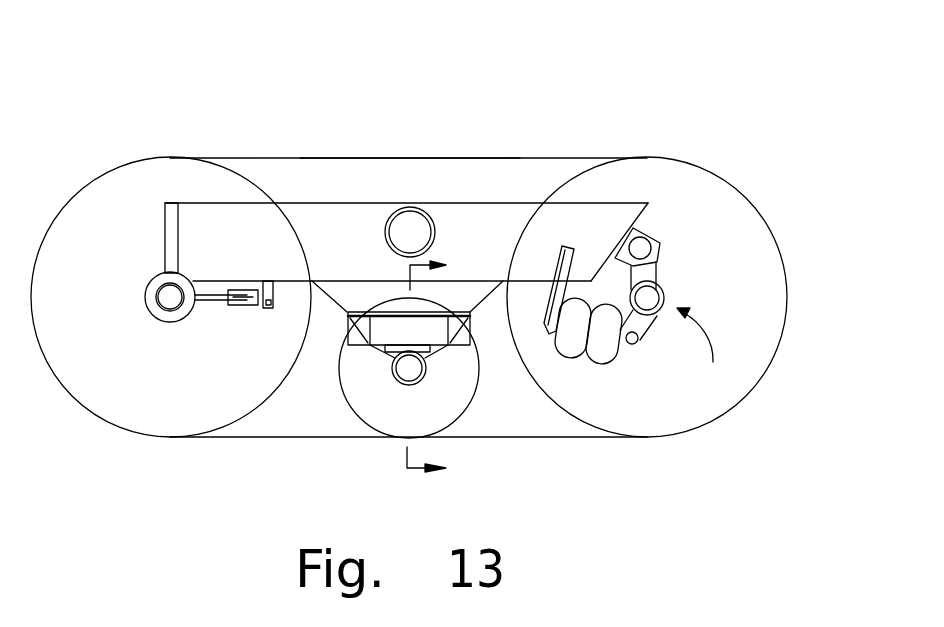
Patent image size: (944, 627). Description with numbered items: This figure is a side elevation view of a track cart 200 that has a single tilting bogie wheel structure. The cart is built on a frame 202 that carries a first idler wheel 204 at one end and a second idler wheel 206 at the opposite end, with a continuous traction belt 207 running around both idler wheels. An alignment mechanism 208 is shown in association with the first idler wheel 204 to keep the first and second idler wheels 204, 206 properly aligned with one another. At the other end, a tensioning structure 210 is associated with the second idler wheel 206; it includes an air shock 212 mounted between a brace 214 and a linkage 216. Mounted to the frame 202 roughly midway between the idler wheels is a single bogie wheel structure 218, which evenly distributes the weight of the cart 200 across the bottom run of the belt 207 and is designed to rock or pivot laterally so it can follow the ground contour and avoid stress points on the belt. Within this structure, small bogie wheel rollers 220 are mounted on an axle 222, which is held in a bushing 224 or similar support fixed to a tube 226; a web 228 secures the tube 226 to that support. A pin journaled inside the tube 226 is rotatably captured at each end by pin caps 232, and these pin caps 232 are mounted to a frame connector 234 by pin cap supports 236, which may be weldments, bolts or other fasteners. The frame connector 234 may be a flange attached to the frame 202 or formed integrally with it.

The track cart 200 is at (631, 80).
The frame 202 is at (318, 212).
The first idler wheel 204 is at (90, 188).
The second idler wheel 206 is at (763, 243).
The continuous traction belt 207 is at (432, 158).
The alignment mechanism 208 is at (235, 279).
The tensioning structure 210 is at (704, 350).
The air shock 212 is at (602, 348).
The brace 214 is at (567, 247).
The linkage 216 is at (655, 268).
The bogie wheel structure 218 is at (478, 419).
The bogie wheel rollers 220 is at (345, 360).
The axle 222 is at (410, 370).
The bushing 224 is at (382, 352).
The tube 226 is at (390, 328).
The web 228 is at (368, 352).
The pin caps 232 is at (457, 323).
The frame connector 234 is at (358, 293).
The pin cap supports 236 is at (475, 318).